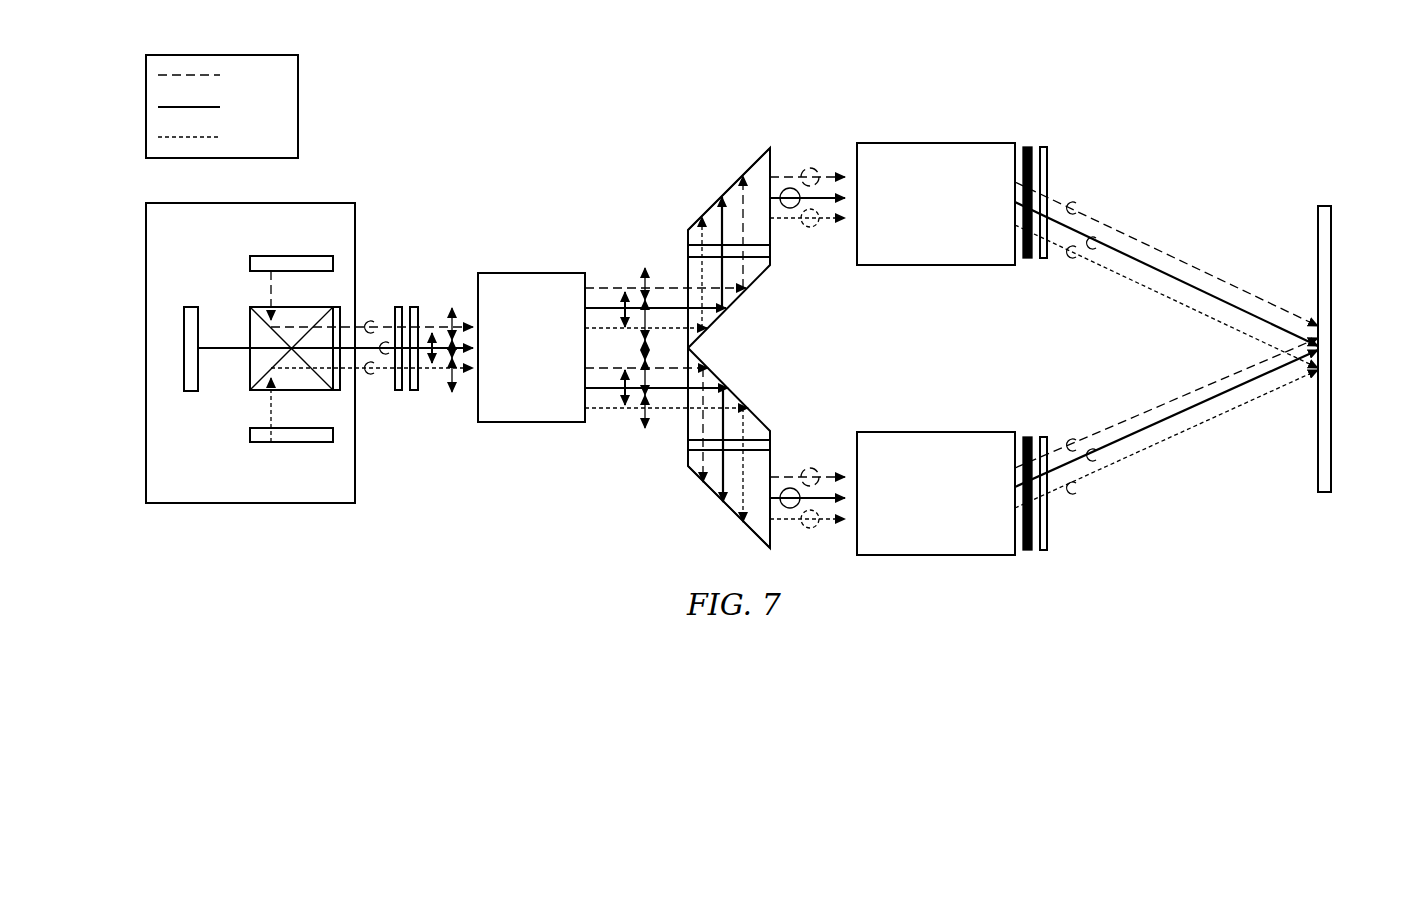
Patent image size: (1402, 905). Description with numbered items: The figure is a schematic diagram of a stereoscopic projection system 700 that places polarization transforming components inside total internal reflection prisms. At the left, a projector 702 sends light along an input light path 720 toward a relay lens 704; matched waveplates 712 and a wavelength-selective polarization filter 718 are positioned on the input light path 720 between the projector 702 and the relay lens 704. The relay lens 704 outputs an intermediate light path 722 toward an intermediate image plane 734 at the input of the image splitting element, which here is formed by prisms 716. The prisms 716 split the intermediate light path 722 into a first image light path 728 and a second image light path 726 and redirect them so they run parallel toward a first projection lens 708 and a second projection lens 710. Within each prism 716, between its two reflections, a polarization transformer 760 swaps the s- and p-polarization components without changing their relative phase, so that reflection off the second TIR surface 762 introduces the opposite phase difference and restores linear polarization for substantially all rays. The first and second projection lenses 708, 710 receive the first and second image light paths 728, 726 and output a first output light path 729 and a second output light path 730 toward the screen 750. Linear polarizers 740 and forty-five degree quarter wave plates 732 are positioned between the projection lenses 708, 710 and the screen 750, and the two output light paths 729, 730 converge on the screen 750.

The stereoscopic projection system 700 is at (773, 351).
The projector 702 is at (200, 504).
The relay lens 704 is at (531, 347).
The first projection lens 708 is at (936, 204).
The second projection lens 710 is at (936, 493).
The matched waveplates 712 is at (340, 306).
The prisms 716 is at (705, 207).
The wavelength-selective polarization filter 718 is at (415, 392).
The input light path 720 is at (433, 330).
The intermediate light path 722 is at (608, 284).
The second image light path 726 is at (738, 402).
The first image light path 728 is at (824, 229).
The first output light path 729 is at (1136, 233).
The second output light path 730 is at (1136, 463).
The 45° quarter wave plates 732 is at (1048, 166).
The intermediate image plane 734 is at (688, 418).
The linear polarizers 740 is at (1030, 259).
The screen 750 is at (1333, 248).
The polarization transformers 760 is at (757, 262).
The second TIR surface 762 is at (752, 166).